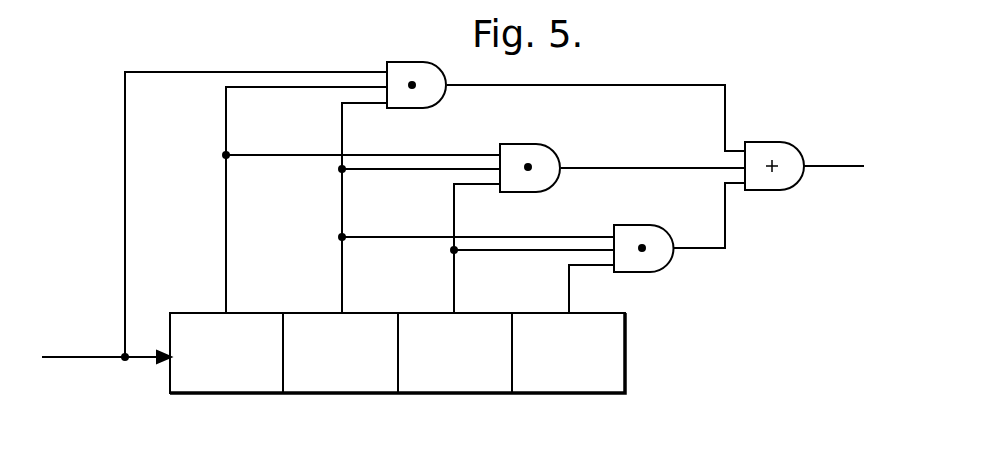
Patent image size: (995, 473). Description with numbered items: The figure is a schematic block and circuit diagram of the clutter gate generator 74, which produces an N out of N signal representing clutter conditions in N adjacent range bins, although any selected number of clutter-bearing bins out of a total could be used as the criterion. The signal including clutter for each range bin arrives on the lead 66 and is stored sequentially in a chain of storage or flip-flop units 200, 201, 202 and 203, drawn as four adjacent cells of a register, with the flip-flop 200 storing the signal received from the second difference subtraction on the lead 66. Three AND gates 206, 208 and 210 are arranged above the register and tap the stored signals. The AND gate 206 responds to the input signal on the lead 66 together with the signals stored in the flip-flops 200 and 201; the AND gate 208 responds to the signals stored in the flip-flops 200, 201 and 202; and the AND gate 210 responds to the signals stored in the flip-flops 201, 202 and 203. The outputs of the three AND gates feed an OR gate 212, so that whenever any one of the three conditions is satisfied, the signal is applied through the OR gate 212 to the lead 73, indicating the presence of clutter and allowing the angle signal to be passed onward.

The lead 66 is at (100, 358).
The lead 73 is at (843, 167).
The clutter gate generator 74 is at (762, 268).
The flip-flop 200 is at (253, 383).
The flip-flop 201 is at (375, 383).
The flip-flop 202 is at (488, 383).
The flip-flop 203 is at (590, 380).
The AND gate 206 is at (440, 96).
The AND gate 208 is at (547, 152).
The AND gate 210 is at (666, 264).
The OR gate 212 is at (790, 152).